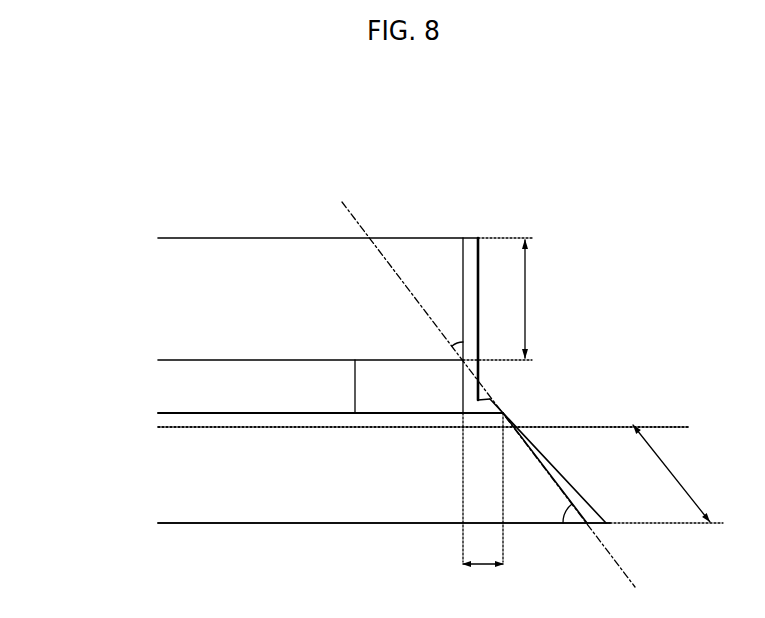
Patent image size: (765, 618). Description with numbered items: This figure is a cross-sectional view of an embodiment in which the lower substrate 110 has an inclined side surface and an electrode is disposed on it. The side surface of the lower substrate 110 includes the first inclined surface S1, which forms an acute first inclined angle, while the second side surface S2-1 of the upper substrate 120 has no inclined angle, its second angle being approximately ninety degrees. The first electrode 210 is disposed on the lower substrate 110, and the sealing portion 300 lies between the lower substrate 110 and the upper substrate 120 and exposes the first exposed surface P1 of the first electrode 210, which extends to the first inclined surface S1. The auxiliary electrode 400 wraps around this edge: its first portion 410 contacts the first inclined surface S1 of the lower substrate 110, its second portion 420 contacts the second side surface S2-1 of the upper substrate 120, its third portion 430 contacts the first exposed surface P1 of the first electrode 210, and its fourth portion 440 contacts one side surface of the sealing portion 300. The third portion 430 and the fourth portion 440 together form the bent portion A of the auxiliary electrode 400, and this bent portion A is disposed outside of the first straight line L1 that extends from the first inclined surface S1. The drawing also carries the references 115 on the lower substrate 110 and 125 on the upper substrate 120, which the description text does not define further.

The lower substrate 110 is at (172, 476).
The bottom surface of lower substrate 115 is at (417, 523).
The upper substrate 120 is at (172, 294).
The lower surface of upper substrate 125 is at (180, 360).
The first electrode 210 is at (160, 418).
The sealing portion 300 is at (356, 389).
The auxiliary electrode 400 is at (576, 356).
The first portion 410 is at (565, 478).
The second portion 420 is at (478, 263).
The third portion 430 is at (489, 398).
The fourth portion 440 is at (480, 374).
The bent portion A is at (661, 176).
The first straight line L1 is at (481, 379).
The first inclined surface S1 is at (671, 473).
The second side surface S2-1 is at (547, 299).
The first exposed surface P1 is at (483, 503).